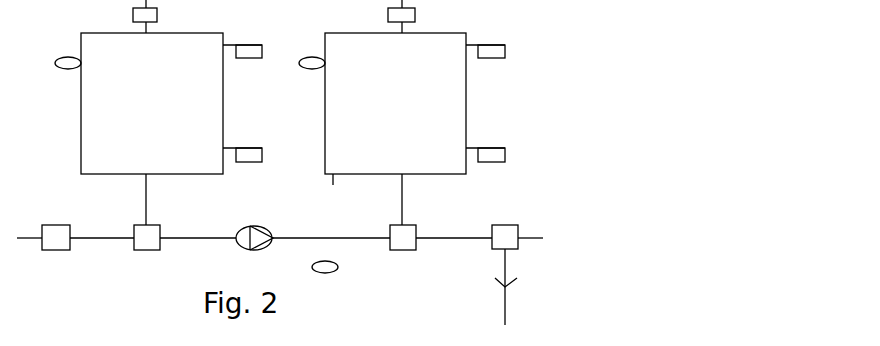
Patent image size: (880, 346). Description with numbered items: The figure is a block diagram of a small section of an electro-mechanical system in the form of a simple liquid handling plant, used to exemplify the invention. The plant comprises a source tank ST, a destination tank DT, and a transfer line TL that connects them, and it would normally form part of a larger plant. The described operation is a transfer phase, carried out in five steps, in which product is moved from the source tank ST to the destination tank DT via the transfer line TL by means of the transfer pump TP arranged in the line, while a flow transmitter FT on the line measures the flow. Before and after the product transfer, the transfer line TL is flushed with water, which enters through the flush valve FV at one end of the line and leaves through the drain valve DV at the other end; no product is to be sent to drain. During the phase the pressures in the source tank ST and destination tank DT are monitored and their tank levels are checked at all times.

The source tank ST is at (152, 103).
The destination tank DT is at (395, 109).
The transfer line TL is at (280, 227).
The TL flush valve FV is at (63, 250).
The transfer pump TP is at (259, 251).
The TL flow transmitter FT is at (328, 277).
The TL drain valve DV is at (518, 275).